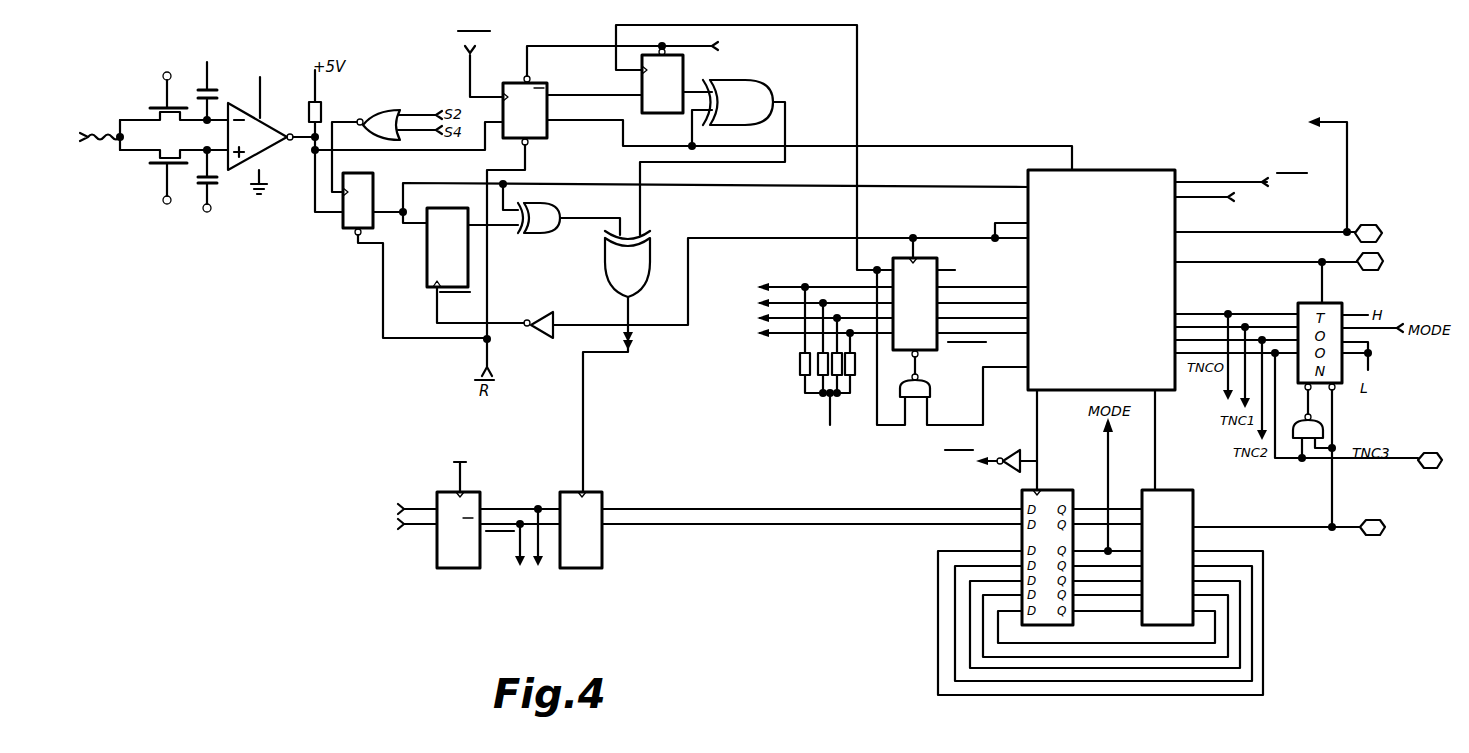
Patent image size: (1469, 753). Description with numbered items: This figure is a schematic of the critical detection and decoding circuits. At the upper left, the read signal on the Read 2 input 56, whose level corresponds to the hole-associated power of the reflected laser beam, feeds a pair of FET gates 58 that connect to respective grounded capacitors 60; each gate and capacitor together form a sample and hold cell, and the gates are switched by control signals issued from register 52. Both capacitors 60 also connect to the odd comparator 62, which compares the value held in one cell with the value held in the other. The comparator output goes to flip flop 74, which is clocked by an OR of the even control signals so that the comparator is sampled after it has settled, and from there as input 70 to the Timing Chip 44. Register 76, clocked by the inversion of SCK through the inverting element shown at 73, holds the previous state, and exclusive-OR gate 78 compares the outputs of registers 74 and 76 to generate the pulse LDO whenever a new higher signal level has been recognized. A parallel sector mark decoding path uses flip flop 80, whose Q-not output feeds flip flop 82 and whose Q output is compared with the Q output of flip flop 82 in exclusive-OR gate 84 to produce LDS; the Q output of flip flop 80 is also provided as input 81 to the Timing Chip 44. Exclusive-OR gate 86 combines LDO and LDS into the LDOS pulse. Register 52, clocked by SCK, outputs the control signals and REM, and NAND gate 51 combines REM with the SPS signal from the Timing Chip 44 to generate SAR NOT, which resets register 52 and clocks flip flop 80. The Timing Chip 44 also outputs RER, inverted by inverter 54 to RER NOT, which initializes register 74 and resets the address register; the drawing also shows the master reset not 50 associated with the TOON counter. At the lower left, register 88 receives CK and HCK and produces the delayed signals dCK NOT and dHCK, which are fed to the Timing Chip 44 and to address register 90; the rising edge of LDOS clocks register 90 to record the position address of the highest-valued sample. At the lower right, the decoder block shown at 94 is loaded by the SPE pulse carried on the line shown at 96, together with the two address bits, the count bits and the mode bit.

The Read 2 signal 2 is at (102, 142).
The Read 2 input line 56 is at (110, 138).
The FET gates 58 is at (158, 106).
The capacitors 60 is at (217, 88).
The odd comparator 62 is at (262, 122).
The input to Timing Chip 70 is at (921, 188).
The inverter 73 is at (541, 340).
The register 74 is at (373, 181).
The register 76 is at (438, 209).
The exclusive-OR gate 78 is at (548, 208).
The flip flop 80 is at (512, 80).
The input to Timing Chip 81 is at (953, 144).
The flip flop 82 is at (684, 58).
The exclusive-OR gate 84 is at (747, 83).
The exclusive-OR gate 86 is at (650, 252).
The Timing Chip 44 is at (1147, 178).
The master reset not 50 is at (1011, 452).
The NAND gate 51 is at (930, 397).
The register 52 is at (940, 259).
The inverter 54 is at (994, 465).
The register 88 is at (440, 492).
The address register 90 is at (600, 492).
The decoder 94 is at (1195, 498).
The strobe line 96 is at (1158, 421).